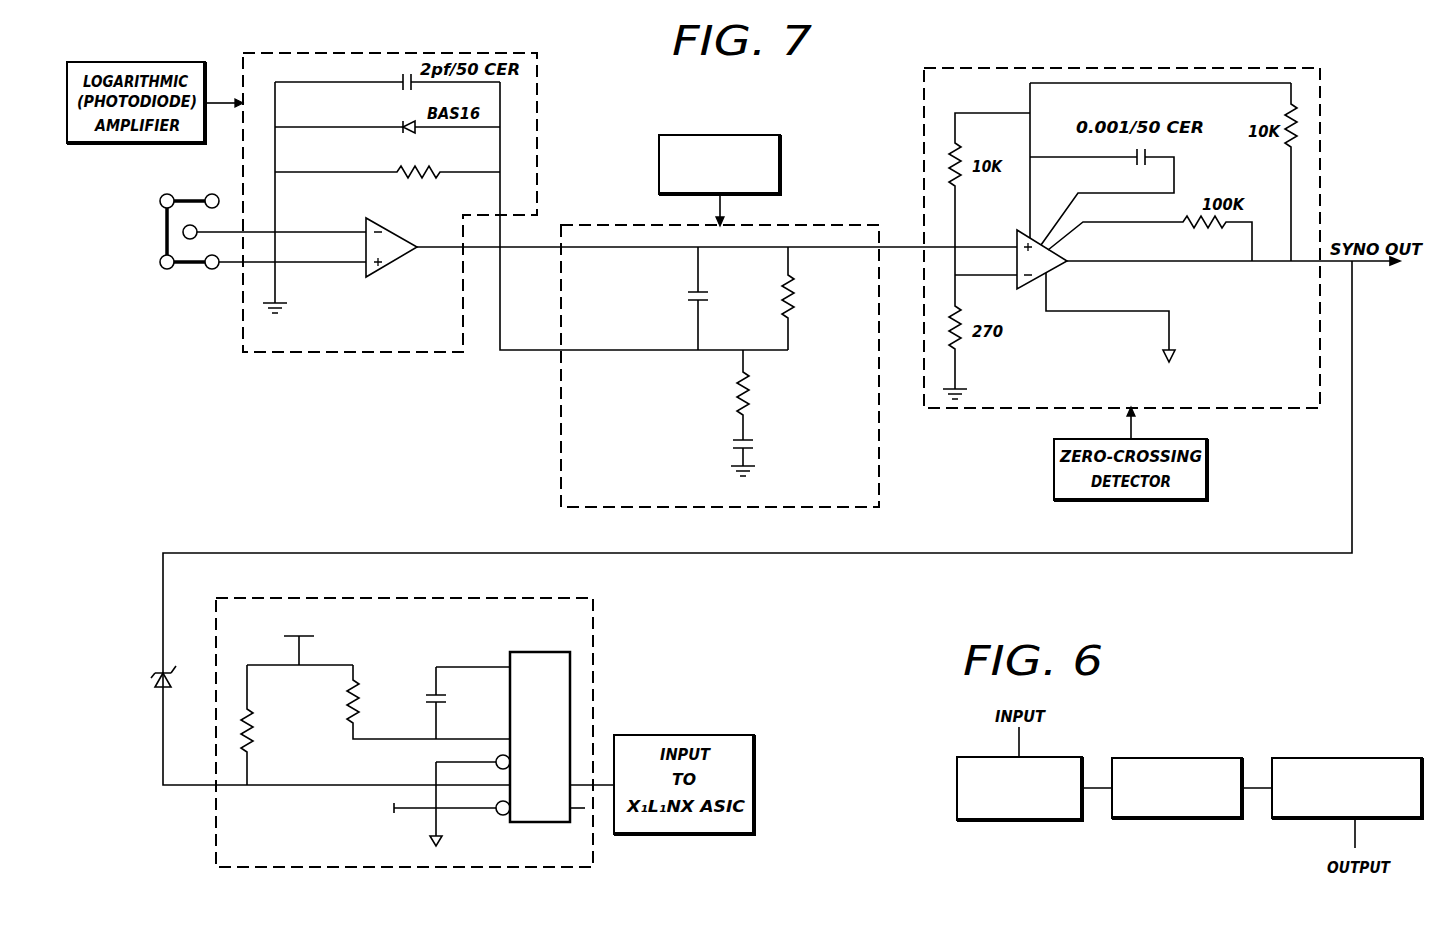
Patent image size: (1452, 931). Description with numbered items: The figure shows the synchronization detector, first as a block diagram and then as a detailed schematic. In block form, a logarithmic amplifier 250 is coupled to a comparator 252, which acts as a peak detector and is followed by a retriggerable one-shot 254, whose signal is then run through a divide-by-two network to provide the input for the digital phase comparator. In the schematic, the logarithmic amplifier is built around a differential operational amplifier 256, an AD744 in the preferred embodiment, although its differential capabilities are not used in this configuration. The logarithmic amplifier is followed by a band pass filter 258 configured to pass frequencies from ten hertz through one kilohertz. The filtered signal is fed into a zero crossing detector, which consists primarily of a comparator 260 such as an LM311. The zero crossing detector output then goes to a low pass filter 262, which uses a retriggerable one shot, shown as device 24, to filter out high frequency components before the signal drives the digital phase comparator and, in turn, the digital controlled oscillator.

In FIG. 7, the flip-flop / latch chip 24 is at (524, 649).
In FIG. 6, the logarithmic amplifier 250 is at (1057, 757).
In FIG. 6, the comparator 252 is at (1170, 758).
In FIG. 6, the retriggerable one-shot 254 is at (1302, 758).
In FIG. 7, the differential operational amplifier 256 is at (395, 265).
In FIG. 7, the band pass filter 258 is at (561, 432).
In FIG. 7, the comparator 260 is at (1024, 290).
In FIG. 7, the low pass filter 262 is at (417, 732).